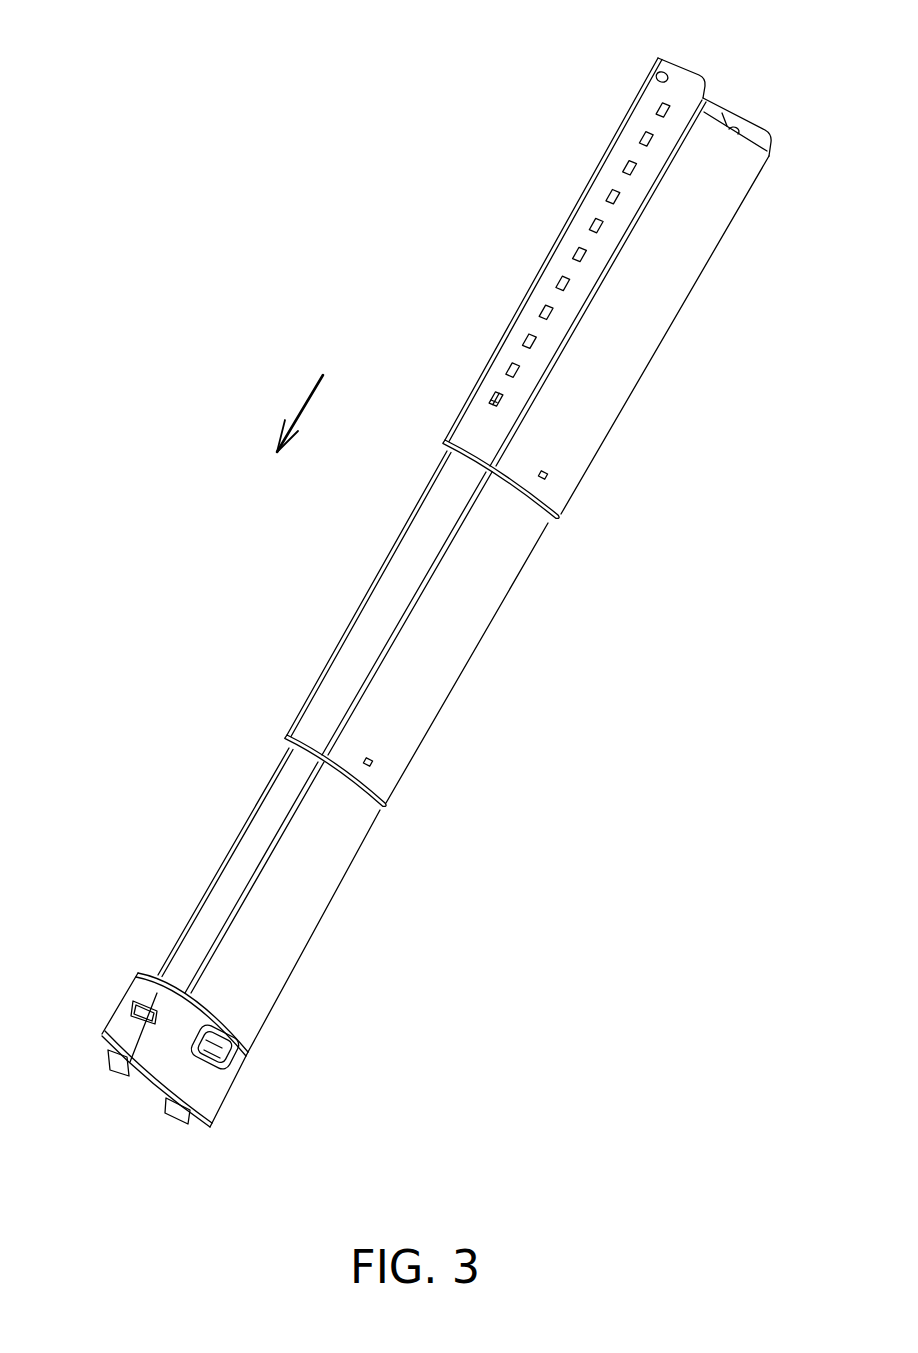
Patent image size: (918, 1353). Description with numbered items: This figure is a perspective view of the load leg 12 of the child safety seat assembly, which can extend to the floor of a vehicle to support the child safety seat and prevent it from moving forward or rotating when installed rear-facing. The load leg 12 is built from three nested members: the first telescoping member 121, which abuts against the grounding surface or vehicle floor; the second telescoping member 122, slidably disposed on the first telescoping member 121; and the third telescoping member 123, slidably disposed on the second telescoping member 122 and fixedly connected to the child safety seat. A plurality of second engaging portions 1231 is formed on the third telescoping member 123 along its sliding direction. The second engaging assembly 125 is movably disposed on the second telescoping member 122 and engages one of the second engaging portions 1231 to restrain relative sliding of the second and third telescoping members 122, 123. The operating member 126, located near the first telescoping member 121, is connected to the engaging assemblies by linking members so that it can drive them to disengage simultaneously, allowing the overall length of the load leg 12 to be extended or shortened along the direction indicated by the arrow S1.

The load leg 12 is at (273, 93).
The first telescoping member 121 is at (227, 880).
The second telescoping member 122 is at (375, 607).
The third telescoping member 123 is at (668, 298).
The second engaging portions 1231 is at (592, 226).
The second engaging assembly 125 is at (483, 393).
The operating member 126 is at (221, 1052).
The direction of extension S1 is at (298, 406).